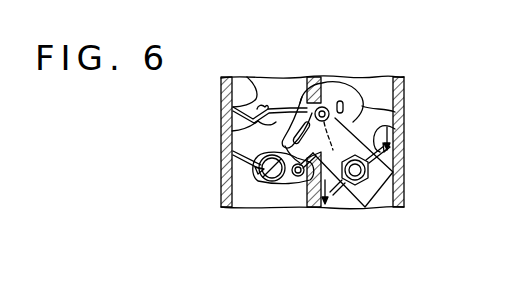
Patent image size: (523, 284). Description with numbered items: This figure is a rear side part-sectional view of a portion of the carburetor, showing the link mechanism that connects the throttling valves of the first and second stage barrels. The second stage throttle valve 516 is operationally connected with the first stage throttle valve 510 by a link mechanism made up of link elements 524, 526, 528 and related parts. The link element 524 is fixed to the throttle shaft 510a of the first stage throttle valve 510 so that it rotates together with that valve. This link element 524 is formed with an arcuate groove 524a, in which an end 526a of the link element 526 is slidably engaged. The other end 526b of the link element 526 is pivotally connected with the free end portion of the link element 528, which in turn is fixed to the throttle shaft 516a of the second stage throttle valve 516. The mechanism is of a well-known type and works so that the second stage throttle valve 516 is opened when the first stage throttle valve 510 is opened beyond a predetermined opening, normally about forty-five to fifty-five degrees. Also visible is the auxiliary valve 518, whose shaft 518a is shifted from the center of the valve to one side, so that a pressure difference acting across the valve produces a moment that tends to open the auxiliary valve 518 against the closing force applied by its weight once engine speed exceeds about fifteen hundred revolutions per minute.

The first stage throttle valve 510 is at (403, 128).
The throttle shaft 510a is at (395, 170).
The second stage throttle valve 516 is at (233, 170).
The throttle shaft 516a is at (260, 186).
The auxiliary valve 518 is at (250, 77).
The shaft 518a is at (228, 124).
The link element 524 is at (404, 98).
The arcuate groove 524a is at (333, 99).
The link element 526 is at (338, 188).
The end of link element 526a is at (307, 97).
The other end of link element 526b is at (301, 183).
The link element 528 is at (278, 183).